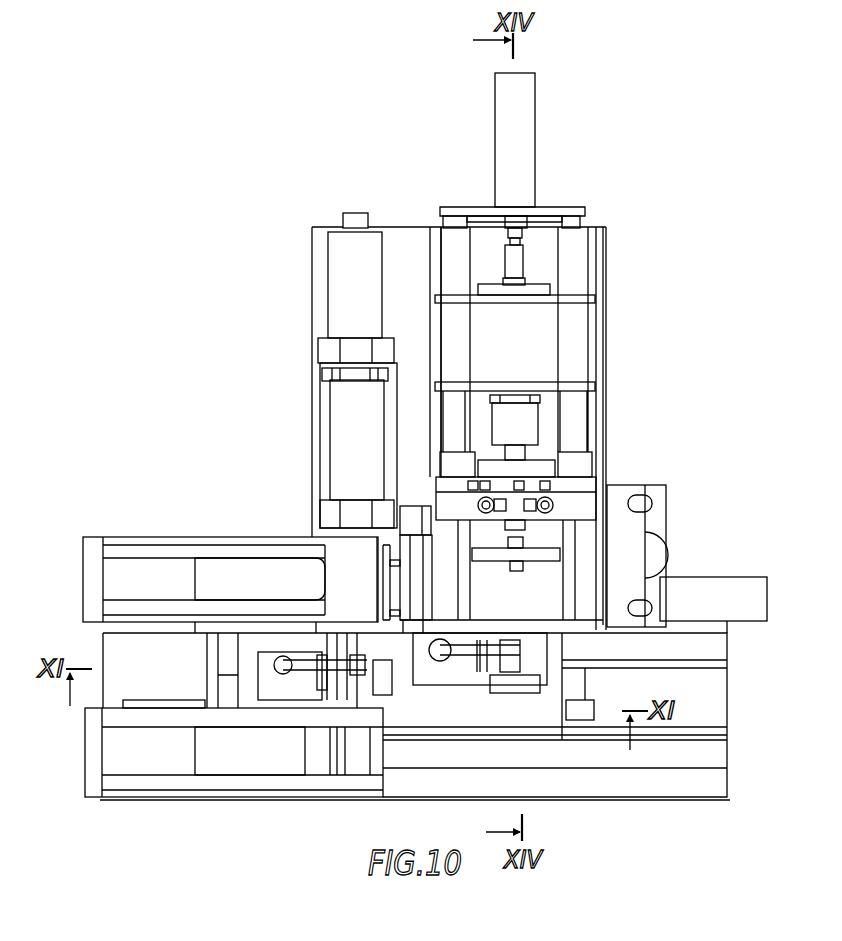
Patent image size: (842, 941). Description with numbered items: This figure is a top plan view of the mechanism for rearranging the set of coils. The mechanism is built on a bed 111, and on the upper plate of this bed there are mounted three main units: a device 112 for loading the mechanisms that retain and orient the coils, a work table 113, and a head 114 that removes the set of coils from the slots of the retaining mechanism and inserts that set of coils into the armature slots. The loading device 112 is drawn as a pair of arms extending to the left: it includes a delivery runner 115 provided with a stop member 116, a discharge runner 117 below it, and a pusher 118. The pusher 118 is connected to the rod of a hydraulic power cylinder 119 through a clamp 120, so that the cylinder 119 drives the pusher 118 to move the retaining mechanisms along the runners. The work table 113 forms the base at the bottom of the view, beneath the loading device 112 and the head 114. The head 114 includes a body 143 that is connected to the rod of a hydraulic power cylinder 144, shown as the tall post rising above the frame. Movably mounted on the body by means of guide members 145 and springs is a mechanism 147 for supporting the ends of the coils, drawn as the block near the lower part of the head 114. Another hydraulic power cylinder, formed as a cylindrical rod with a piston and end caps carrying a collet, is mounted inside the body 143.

The bed 111 is at (322, 306).
The device for loading the mechanisms 112 is at (204, 530).
The work table 113 is at (458, 784).
The head 114 is at (616, 373).
The delivery runner 115 is at (283, 573).
The stop member 116 is at (387, 590).
The discharge runner 117 is at (314, 778).
The pusher 118 is at (335, 430).
The hydraulic power cylinder 119 is at (354, 220).
The clamp 120 is at (330, 378).
The body 143 is at (583, 334).
The hydraulic power cylinder 144 is at (524, 181).
The guide members 145 is at (582, 425).
The mechanism for supporting the ends of the coils 147 is at (585, 497).